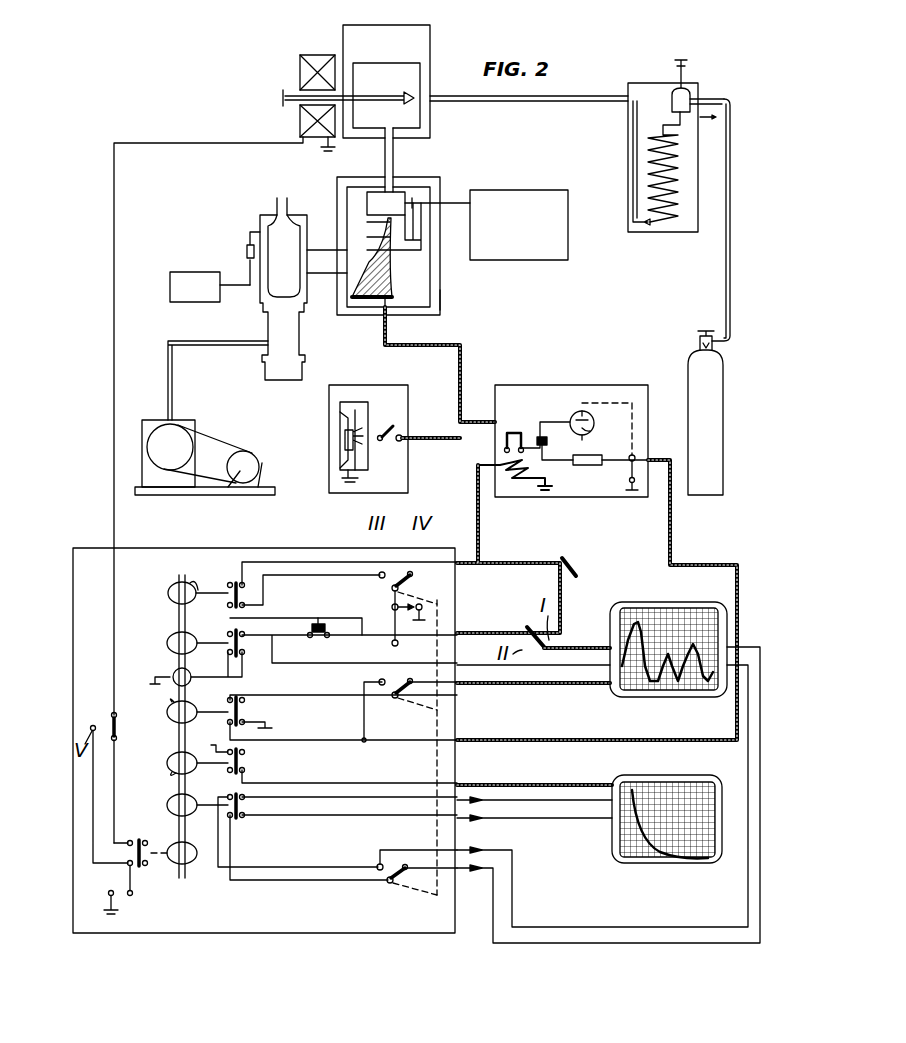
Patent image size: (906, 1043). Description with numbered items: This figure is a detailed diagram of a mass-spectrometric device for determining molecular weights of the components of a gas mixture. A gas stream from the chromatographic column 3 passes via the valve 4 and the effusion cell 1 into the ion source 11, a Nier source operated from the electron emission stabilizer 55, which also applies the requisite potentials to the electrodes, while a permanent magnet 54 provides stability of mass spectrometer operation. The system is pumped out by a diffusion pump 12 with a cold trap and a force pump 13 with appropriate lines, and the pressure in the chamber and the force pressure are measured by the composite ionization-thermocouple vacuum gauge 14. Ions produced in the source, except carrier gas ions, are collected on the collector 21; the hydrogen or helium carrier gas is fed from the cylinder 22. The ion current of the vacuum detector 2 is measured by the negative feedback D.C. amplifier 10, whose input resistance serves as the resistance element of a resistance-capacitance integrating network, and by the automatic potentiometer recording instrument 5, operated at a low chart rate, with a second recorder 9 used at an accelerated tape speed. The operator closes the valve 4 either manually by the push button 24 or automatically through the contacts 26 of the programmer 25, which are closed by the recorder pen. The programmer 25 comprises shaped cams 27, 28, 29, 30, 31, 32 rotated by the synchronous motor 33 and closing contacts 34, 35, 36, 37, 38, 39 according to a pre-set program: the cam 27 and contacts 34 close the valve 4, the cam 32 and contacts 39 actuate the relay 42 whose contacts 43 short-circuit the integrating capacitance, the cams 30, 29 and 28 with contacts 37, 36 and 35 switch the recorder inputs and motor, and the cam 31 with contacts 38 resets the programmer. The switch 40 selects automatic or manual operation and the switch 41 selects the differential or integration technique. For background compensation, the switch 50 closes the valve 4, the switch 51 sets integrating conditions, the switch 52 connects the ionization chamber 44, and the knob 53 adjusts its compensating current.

The effusion cell 1 is at (398, 74).
The vacuum detector 2 is at (355, 232).
The chromatographic column 3 is at (666, 136).
The valve 4 is at (318, 64).
The recording instrument 5 is at (629, 690).
The recorder 9 is at (647, 862).
The negative feedback D.C. amplifier 10 is at (566, 385).
The ion source 11 is at (404, 192).
The diffusion pump 12 is at (290, 340).
The force pump 13 is at (178, 440).
The composite ionization-thermocouple vacuum gauge 14 is at (210, 287).
The collector 21 is at (386, 297).
The cylinder 22 is at (690, 388).
The push button 24 is at (318, 618).
The programmer 25 is at (222, 568).
The contacts 26 is at (633, 622).
The cam 27 is at (168, 848).
The cam 28 is at (168, 801).
The cam 29 is at (168, 760).
The cam 30 is at (168, 710).
The cam 31 is at (168, 640).
The cam 32 is at (170, 589).
The synchronous motor 33 is at (173, 672).
The contacts 34 is at (136, 870).
The contacts 35 is at (248, 818).
The contacts 36 is at (248, 758).
The contacts 37 is at (248, 710).
The contacts 38 is at (246, 660).
The contacts 39 is at (248, 596).
The switch 40 is at (531, 631).
The switch 41 is at (383, 590).
The relay 42 is at (527, 487).
The contacts 43 is at (517, 432).
The ionization chamber 44 is at (392, 410).
The switch 50 is at (100, 718).
The switch 51 is at (570, 560).
The switch 52 is at (419, 448).
The knob 53 is at (345, 492).
The permanent magnet 54 is at (442, 290).
The electron emission stabilizer 55 is at (519, 225).